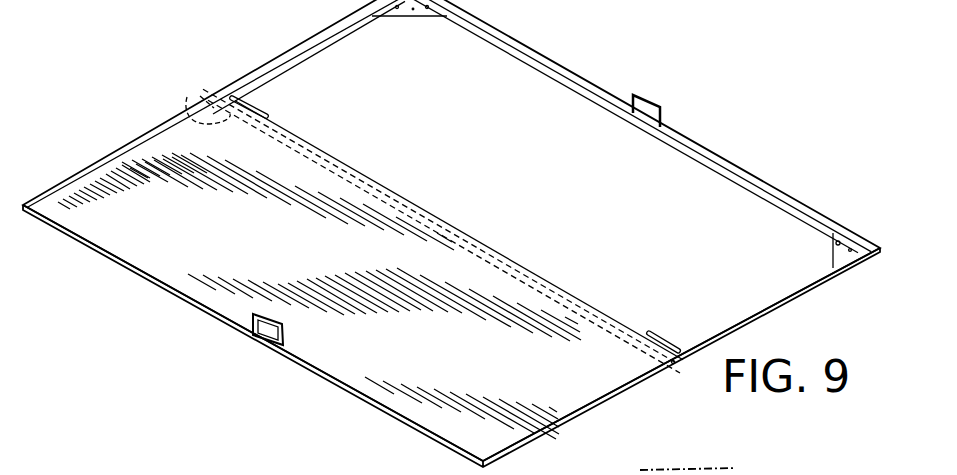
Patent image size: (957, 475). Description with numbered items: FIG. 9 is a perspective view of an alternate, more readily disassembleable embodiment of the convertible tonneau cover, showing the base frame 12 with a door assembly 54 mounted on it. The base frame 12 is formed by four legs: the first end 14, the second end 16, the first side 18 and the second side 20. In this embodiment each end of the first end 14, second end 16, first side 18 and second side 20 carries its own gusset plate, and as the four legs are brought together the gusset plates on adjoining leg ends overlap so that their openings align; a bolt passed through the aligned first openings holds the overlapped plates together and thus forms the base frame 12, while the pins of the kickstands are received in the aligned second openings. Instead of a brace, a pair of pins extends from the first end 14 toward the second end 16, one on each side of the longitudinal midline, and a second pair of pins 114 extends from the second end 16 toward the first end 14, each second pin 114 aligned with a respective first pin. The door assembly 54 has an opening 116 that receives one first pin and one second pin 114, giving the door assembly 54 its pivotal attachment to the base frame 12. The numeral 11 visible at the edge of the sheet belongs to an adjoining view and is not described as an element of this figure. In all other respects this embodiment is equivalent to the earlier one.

The base frame 12 is at (588, 66).
The second end 16 is at (265, 68).
The second side 20 is at (735, 165).
The first end 14 is at (792, 290).
The first side 18 is at (305, 367).
The door assembly 54 is at (156, 236).
The second pin 114 is at (255, 106).
The opening 116 is at (190, 98).
The adjacent figure reference 11 is at (705, 470).